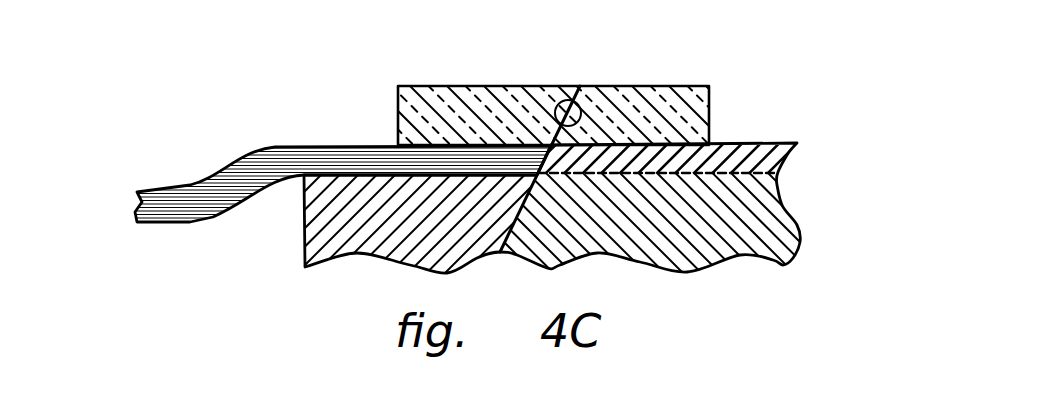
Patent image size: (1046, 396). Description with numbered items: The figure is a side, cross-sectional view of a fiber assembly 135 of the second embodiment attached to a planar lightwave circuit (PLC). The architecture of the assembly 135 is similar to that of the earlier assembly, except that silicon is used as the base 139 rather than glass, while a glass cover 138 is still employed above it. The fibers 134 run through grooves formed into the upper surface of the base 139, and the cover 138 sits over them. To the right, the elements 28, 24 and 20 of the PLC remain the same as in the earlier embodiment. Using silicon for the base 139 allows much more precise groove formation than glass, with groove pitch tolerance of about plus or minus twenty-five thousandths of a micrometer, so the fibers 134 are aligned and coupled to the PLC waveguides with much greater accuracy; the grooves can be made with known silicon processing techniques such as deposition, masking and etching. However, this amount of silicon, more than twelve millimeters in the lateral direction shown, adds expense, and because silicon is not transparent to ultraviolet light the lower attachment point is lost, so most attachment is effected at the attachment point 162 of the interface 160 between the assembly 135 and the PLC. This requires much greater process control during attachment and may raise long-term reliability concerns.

The PLC element 20 is at (770, 223).
The PLC element 24 is at (744, 150).
The PLC element 28 is at (687, 112).
The fibers 134 is at (194, 183).
The assembly 135 is at (412, 69).
The glass cover 138 is at (420, 108).
The base 139 is at (330, 228).
The interface 160 is at (592, 68).
The attachment point 162 is at (557, 102).